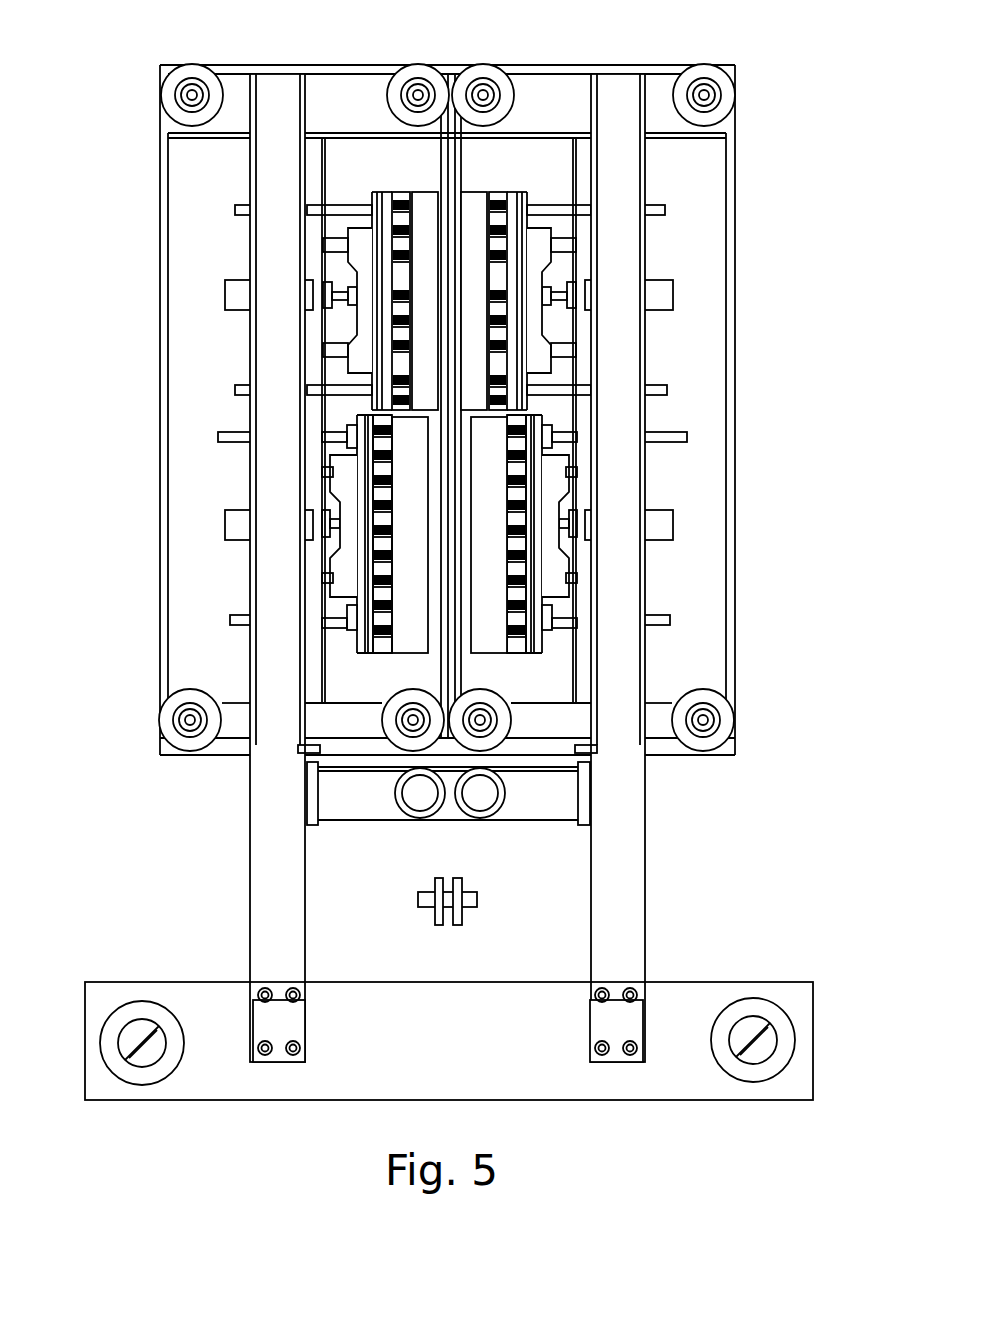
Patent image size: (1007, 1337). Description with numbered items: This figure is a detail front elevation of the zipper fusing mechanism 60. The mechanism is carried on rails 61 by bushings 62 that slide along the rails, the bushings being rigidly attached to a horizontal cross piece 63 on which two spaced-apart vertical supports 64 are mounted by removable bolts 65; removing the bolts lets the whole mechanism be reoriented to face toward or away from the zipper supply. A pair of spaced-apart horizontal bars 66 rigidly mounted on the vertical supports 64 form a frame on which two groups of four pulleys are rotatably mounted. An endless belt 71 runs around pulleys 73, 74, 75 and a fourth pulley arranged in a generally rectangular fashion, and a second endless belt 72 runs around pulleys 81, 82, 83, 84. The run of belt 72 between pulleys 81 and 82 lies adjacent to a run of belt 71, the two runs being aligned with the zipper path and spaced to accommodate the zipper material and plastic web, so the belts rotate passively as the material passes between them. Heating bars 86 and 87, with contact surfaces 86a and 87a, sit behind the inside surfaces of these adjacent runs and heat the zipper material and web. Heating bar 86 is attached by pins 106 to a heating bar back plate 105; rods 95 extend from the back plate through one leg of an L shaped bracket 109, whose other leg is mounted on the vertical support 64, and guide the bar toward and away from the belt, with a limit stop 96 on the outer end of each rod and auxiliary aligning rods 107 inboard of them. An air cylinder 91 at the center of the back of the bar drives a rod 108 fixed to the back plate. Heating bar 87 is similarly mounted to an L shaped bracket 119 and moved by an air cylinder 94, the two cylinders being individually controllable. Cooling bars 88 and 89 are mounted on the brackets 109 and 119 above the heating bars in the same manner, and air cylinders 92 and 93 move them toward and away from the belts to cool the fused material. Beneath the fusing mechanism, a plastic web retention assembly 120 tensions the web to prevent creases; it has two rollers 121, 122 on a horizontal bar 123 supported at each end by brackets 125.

The fusing mechanism 60 is at (152, 468).
The rails 61 is at (125, 1045).
The bushings 62 is at (118, 1080).
The horizontal cross piece 63 is at (798, 983).
The vertical supports 64 is at (258, 875).
The bolts 65 is at (257, 997).
The horizontal bars 66 is at (557, 82).
The endless belt 71 is at (737, 285).
The second endless belt 72 is at (158, 336).
The pulley 73 is at (485, 64).
The pulley 74 is at (728, 93).
The pulley 75 is at (730, 722).
The pulley 81 is at (413, 64).
The pulley 82 is at (382, 712).
The pulley 83 is at (172, 740).
The pulley 84 is at (165, 85).
The heating bar 86 is at (501, 479).
The contact surface 86a is at (466, 640).
The heating bar 87 is at (425, 479).
The contact surface 87a is at (428, 638).
The cooling bar 88 is at (470, 197).
The cooling bar 89 is at (432, 195).
The air cylinder 91 is at (672, 512).
The air cylinder 92 is at (672, 290).
The air cylinder 93 is at (228, 290).
The air cylinder 94 is at (228, 530).
The rods 95 is at (556, 205).
The limit stop 96 is at (285, 198).
The heating bar back plate 105 is at (525, 518).
The pins 106 is at (385, 508).
The auxiliary aligning rods 107 is at (620, 472).
The rod 108 is at (563, 510).
The L shaped bracket 109 is at (640, 662).
The L shaped bracket 119 is at (258, 680).
The plastic web retention assembly 120 is at (548, 790).
The roller 121 is at (420, 817).
The roller 122 is at (474, 817).
The horizontal bar 123 is at (325, 800).
The brackets 125 is at (310, 808).